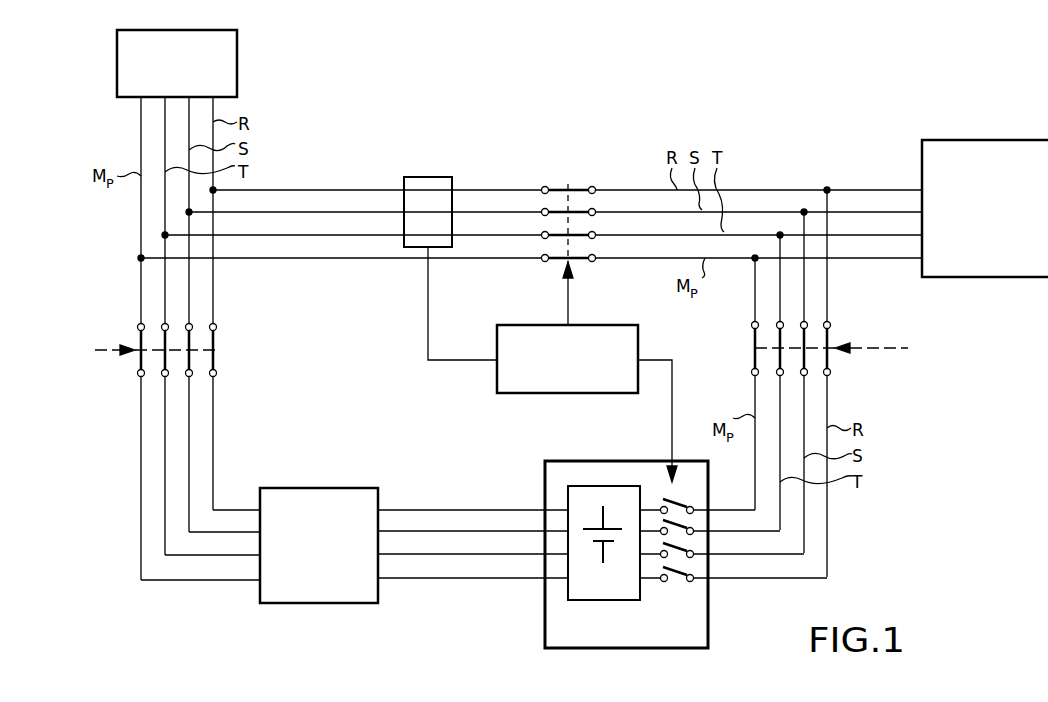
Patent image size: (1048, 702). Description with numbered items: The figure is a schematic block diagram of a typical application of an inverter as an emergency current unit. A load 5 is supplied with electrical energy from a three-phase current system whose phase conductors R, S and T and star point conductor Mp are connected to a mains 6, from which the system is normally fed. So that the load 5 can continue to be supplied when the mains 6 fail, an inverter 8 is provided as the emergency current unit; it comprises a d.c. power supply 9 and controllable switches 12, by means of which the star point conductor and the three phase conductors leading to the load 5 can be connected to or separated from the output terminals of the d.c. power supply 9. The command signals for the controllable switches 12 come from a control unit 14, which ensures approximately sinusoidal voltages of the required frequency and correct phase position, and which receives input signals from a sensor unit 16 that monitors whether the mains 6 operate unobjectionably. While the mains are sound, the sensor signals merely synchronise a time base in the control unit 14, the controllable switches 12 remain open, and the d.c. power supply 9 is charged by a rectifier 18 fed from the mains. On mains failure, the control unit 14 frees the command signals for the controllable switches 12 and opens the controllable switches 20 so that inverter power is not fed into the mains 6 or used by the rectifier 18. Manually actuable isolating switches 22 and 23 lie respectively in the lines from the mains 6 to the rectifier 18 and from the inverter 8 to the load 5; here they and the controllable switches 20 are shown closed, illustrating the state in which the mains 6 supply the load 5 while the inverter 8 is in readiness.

The load 5 is at (1002, 144).
The mains 6 is at (238, 62).
The inverter 8 is at (578, 470).
The d.c. power supply 9 is at (617, 592).
The controllable switches 12 is at (672, 584).
The control unit 14 is at (512, 335).
The sensor unit 16 is at (432, 188).
The rectifier 18 is at (342, 492).
The controllable switches 20 is at (566, 190).
The isolating switch 22 is at (131, 360).
The isolating switch 23 is at (835, 356).